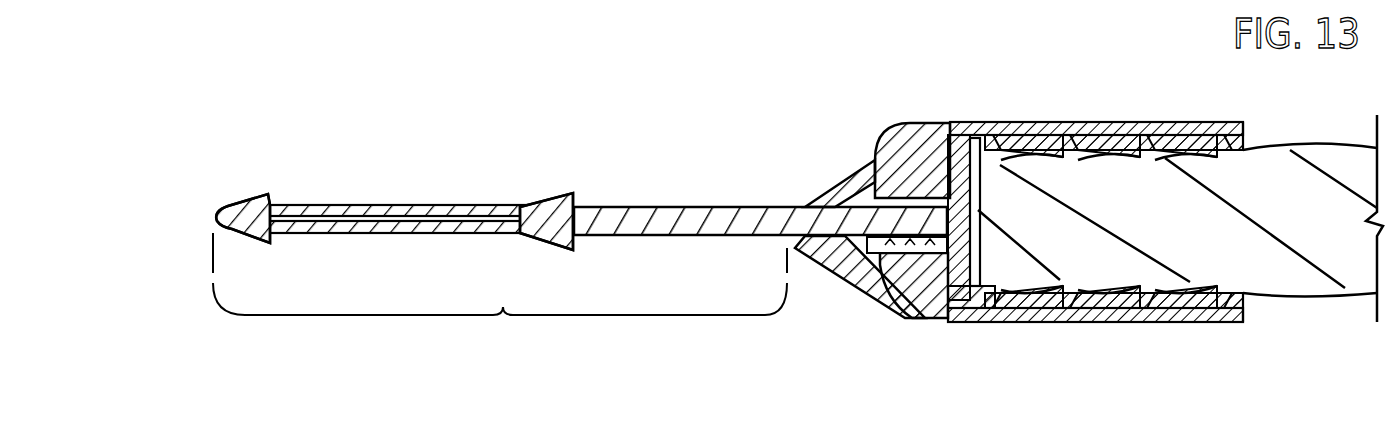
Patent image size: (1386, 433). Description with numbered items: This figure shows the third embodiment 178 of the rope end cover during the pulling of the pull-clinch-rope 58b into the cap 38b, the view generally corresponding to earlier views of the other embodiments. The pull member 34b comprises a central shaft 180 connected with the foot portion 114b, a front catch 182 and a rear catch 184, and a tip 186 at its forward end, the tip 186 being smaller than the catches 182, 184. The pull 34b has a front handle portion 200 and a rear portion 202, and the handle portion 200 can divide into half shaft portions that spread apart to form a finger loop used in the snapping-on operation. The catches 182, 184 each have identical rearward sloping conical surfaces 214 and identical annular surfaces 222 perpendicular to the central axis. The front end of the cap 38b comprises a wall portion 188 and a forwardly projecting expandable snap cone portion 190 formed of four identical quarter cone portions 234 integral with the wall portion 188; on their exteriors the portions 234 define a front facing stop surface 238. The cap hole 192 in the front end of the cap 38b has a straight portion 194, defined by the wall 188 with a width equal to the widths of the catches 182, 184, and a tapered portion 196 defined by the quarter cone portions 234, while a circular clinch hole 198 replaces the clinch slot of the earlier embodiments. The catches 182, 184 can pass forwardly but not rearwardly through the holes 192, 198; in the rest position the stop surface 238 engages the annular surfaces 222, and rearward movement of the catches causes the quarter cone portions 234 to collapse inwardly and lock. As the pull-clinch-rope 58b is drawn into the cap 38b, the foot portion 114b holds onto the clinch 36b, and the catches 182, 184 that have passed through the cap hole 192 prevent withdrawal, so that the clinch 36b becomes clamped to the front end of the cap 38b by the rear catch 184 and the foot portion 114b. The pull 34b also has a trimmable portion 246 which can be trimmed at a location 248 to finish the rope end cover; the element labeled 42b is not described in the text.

The pull member 34b is at (360, 195).
The clinch 36b is at (1127, 133).
The cap 38b is at (1089, 108).
The hub 42b is at (880, 155).
The pull-clinch-rope 58b is at (1208, 127).
The foot portion 114b is at (975, 140).
The third embodiment 178 is at (558, 136).
The central shaft 180 is at (423, 203).
The front catch 182 is at (550, 195).
The rear catch 184 is at (808, 245).
The tip 186 is at (228, 210).
The wall portion 188 is at (842, 165).
The snap cone portion 190 is at (848, 165).
The cap hole 192 is at (905, 300).
The straight portion 194 is at (880, 260).
The tapered portion 196 is at (833, 252).
The clinch hole 198 is at (920, 308).
The front handle portion 200 is at (343, 195).
The rear portion 202 is at (682, 203).
The rearward sloping conical surface 214 is at (535, 205).
The annular surface 222 is at (574, 204).
The quarter cone portion 234 is at (835, 190).
The stop surface 238 is at (815, 205).
The trimmable portion 246 is at (500, 296).
The location 248 is at (783, 247).